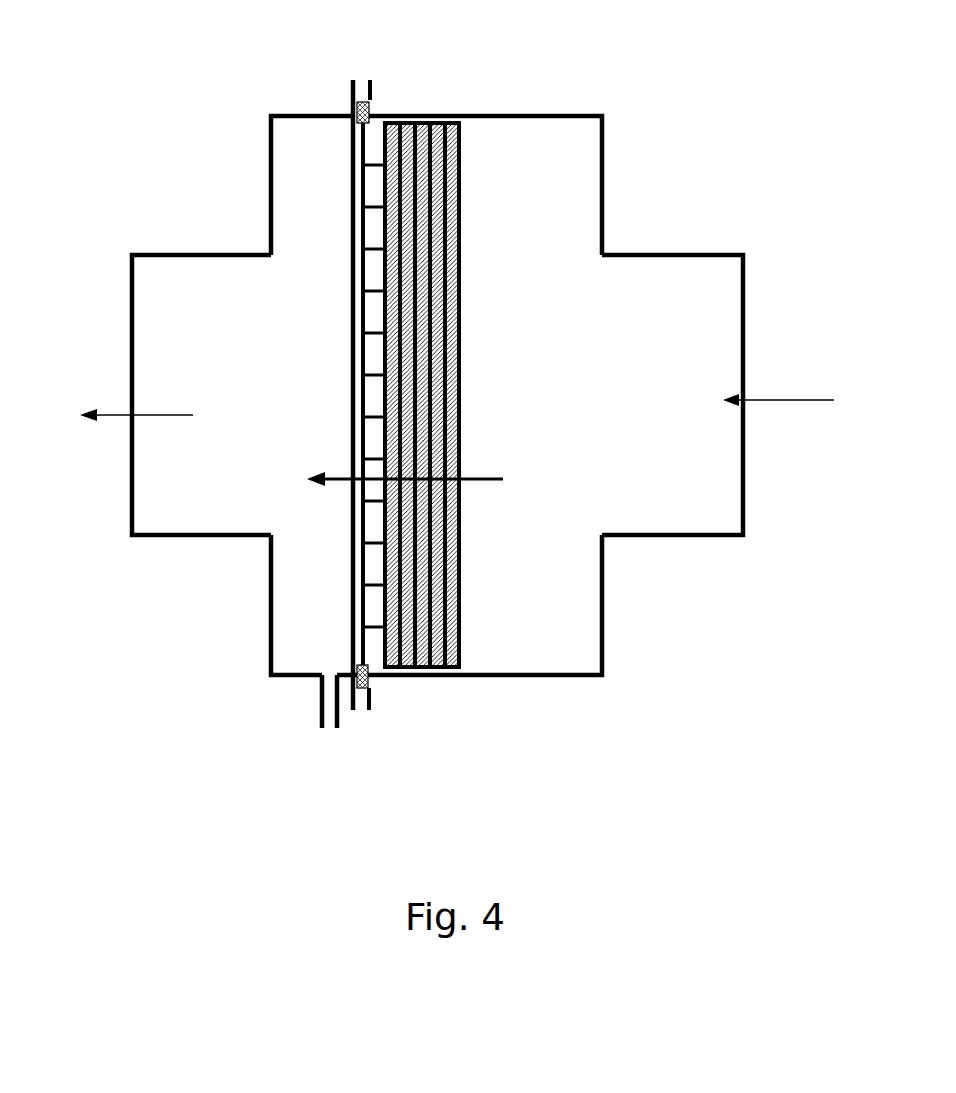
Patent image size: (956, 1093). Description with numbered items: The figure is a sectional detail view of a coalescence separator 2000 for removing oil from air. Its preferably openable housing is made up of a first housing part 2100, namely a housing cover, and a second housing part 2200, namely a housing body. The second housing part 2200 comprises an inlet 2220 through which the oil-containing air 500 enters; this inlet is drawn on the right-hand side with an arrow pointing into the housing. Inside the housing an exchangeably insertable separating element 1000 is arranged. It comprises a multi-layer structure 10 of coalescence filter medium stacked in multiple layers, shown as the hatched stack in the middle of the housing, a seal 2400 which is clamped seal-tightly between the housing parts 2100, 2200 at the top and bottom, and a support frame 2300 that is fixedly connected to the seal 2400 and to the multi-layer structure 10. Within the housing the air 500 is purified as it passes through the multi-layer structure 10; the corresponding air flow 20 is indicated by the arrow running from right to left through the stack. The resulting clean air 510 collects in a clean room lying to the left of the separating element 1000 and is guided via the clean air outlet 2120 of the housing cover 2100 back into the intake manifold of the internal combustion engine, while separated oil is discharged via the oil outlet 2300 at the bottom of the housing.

The electrochemical device 2000 is at (448, 416).
The first housing part 2100 is at (287, 118).
The clean air outlet 2120 is at (157, 258).
The second housing part 2200 is at (545, 120).
The inlet 2220 is at (705, 252).
The support frame 2300 is at (363, 370).
The seal 2400 is at (366, 102).
The separating element 1000 is at (355, 433).
The multi-layer structure 10 is at (462, 353).
The air flow 20 is at (487, 473).
The oil-containing air 500 is at (828, 402).
The clean air 510 is at (110, 413).